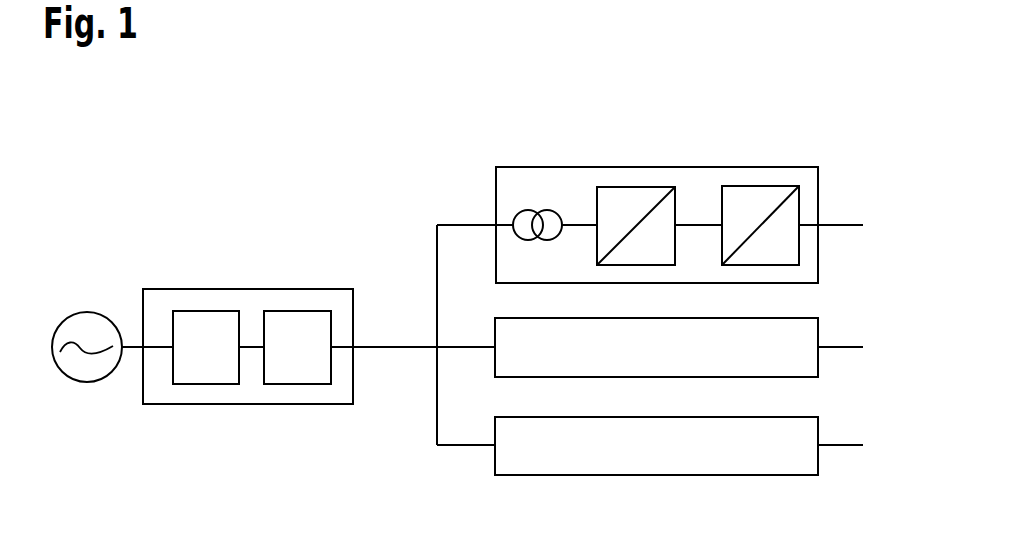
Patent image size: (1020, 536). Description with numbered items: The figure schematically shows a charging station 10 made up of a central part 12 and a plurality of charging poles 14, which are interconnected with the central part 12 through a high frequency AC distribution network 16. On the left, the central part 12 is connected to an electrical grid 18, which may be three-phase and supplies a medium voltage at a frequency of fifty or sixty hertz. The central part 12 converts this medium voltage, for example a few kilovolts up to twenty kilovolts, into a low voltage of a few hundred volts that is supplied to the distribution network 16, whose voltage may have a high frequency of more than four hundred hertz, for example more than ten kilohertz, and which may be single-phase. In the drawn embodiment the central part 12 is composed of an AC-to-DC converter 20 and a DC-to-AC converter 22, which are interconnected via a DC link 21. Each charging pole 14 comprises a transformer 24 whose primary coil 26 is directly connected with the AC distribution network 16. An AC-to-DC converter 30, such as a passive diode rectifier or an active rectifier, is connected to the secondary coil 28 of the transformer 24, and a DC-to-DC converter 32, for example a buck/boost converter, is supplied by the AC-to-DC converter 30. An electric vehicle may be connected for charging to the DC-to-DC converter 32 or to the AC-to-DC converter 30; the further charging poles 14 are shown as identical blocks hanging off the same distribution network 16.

The charging station 10 is at (810, 117).
The central part 12 is at (168, 404).
The charging pole 14 is at (818, 263).
The high frequency AC distribution network 16 is at (437, 268).
The electrical grid 18 is at (90, 312).
The AC-to-DC converter 20 is at (207, 311).
The DC link 21 is at (252, 347).
The DC-to-AC converter 22 is at (297, 311).
The transformer 24 is at (503, 209).
The primary coil 26 is at (516, 212).
The secondary coil 28 is at (556, 212).
The AC-to-DC converter 30 is at (637, 187).
The DC-to-DC converter 32 is at (762, 186).